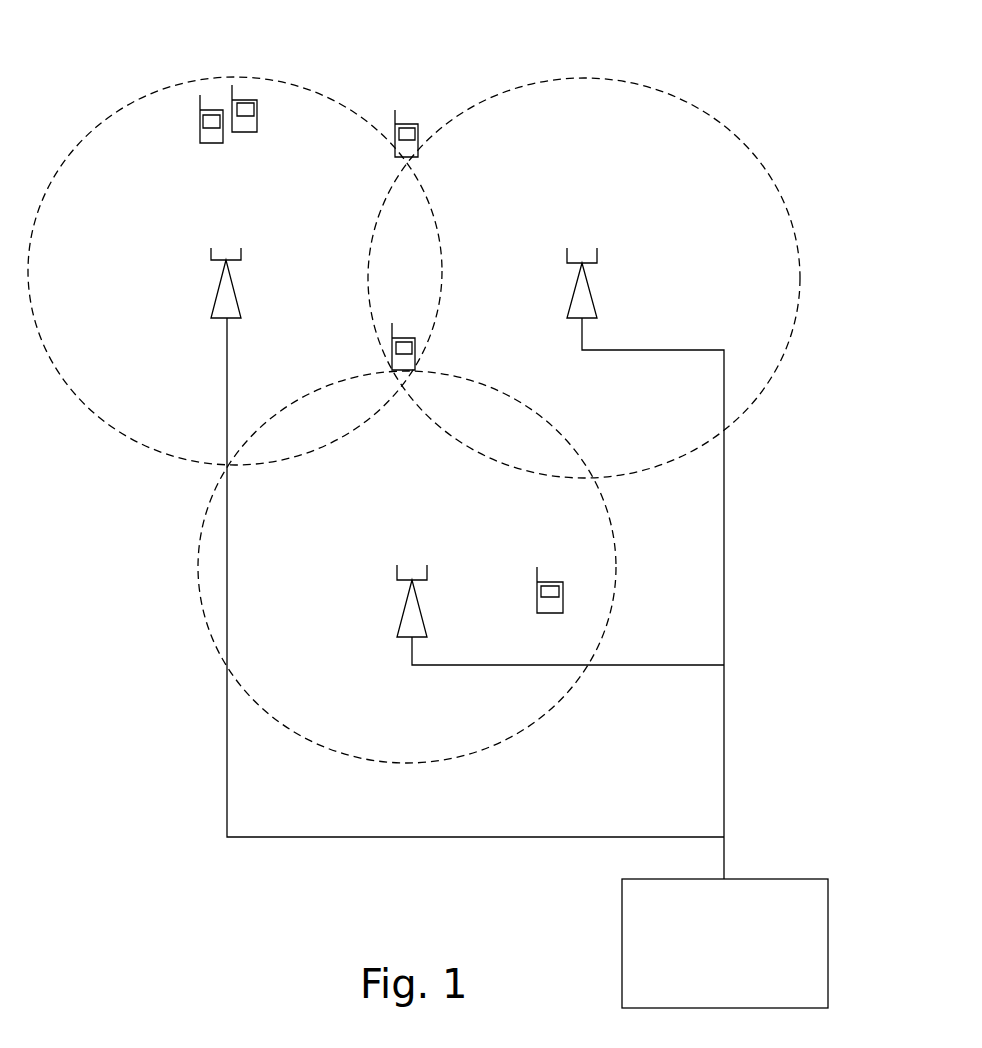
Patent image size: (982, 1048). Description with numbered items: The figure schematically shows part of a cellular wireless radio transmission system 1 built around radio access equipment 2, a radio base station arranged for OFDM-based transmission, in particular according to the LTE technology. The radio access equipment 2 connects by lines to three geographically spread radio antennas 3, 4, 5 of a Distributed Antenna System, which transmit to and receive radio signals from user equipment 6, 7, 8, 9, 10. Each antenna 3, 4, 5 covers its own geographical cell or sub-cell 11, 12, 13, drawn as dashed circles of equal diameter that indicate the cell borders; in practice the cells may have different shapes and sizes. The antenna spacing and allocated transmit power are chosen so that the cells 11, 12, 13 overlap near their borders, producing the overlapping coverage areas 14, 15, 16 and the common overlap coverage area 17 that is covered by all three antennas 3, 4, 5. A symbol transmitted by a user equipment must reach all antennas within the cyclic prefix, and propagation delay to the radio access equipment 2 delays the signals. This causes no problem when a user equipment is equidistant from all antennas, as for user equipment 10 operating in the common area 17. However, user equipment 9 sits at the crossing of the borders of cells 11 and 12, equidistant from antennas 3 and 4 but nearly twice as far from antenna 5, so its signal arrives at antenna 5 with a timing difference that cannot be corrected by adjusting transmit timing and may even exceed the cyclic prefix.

The cellular wireless radio transmission system 1 is at (150, 717).
The radio access equipment 2 is at (772, 892).
The radio antenna 3 is at (230, 293).
The radio antenna 4 is at (585, 293).
The radio antenna 5 is at (415, 607).
The user equipment 6 is at (198, 133).
The user equipment 7 is at (242, 125).
The user equipment 8 is at (557, 608).
The user equipment 9 is at (410, 147).
The user equipment 10 is at (405, 362).
The cell 11 is at (265, 95).
The cell 12 is at (637, 100).
The cell 13 is at (323, 733).
The overlapping coverage area 14 is at (394, 282).
The overlapping coverage area 15 is at (306, 428).
The overlapping coverage area 16 is at (484, 428).
The common overlap coverage area 17 is at (400, 383).